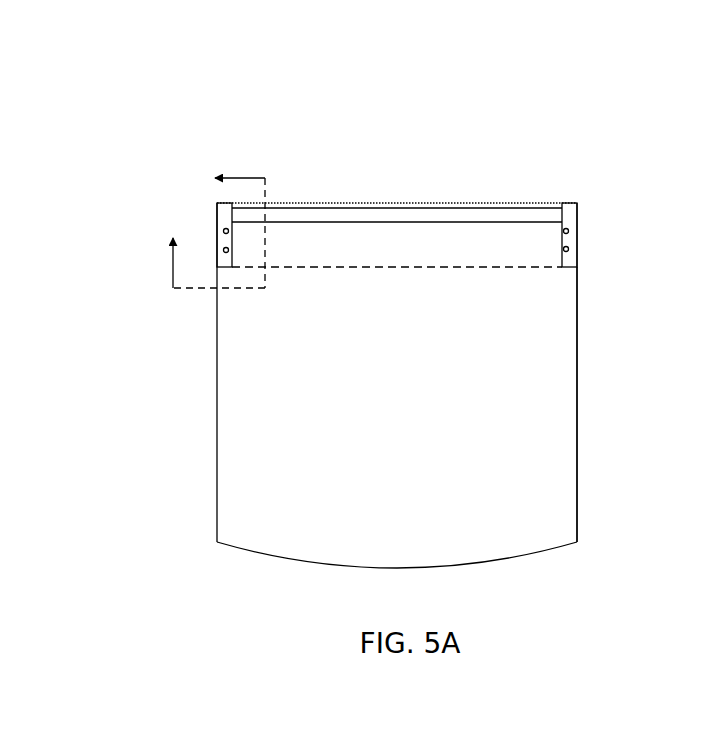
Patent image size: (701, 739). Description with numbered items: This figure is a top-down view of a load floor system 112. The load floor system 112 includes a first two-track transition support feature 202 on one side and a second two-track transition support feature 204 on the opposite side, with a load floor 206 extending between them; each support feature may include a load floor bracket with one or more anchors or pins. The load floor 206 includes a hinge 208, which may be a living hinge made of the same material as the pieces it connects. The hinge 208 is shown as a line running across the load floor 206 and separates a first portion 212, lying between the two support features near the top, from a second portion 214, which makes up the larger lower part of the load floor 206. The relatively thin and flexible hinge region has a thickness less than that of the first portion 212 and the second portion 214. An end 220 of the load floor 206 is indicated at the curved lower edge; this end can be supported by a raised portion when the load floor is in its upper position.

The load floor system 112 is at (177, 113).
The first two-track transition support feature 202 is at (215, 258).
The second two-track transition support feature 204 is at (575, 230).
The load floor 206 is at (258, 471).
The hinge 208 is at (393, 267).
The first portion 212 is at (478, 240).
The second portion 214 is at (542, 420).
The end 220 is at (443, 563).